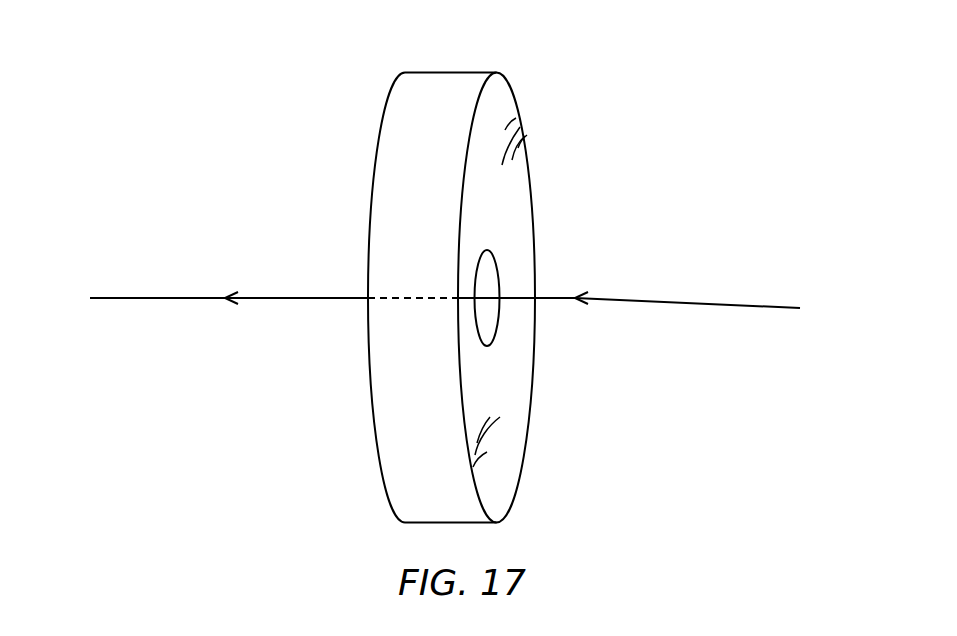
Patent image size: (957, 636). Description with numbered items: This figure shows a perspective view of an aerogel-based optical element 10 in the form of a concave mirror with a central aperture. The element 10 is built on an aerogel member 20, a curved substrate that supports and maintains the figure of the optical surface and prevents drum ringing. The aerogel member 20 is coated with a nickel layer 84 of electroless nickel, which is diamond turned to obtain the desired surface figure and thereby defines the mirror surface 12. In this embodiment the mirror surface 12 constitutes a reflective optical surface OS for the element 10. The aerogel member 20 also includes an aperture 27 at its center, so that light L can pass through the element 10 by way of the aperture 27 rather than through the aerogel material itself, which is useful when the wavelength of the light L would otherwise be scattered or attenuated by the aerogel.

The aerogel-based optical element 10 is at (336, 121).
The aerogel member 20 is at (450, 85).
The mirror surface 12 is at (518, 178).
The reflective optical surface OS is at (518, 221).
The aperture 27 is at (492, 281).
The nickel layer 84 is at (512, 380).
The light L is at (150, 298).